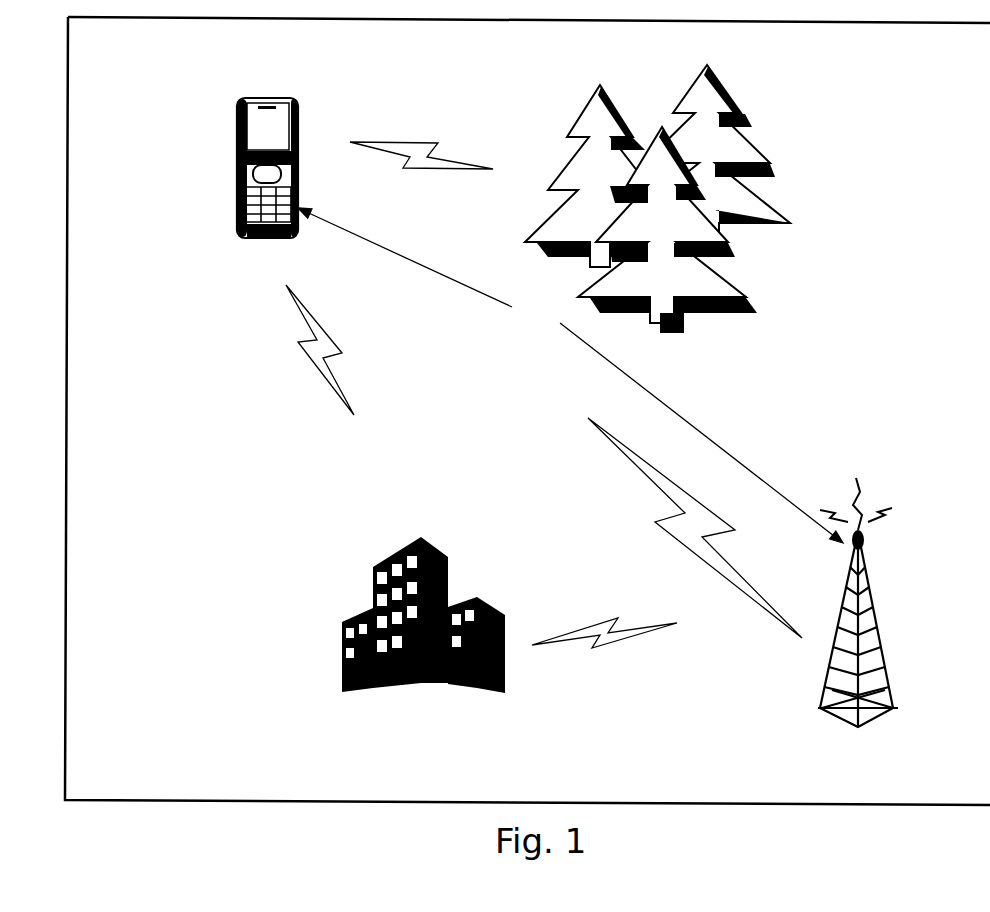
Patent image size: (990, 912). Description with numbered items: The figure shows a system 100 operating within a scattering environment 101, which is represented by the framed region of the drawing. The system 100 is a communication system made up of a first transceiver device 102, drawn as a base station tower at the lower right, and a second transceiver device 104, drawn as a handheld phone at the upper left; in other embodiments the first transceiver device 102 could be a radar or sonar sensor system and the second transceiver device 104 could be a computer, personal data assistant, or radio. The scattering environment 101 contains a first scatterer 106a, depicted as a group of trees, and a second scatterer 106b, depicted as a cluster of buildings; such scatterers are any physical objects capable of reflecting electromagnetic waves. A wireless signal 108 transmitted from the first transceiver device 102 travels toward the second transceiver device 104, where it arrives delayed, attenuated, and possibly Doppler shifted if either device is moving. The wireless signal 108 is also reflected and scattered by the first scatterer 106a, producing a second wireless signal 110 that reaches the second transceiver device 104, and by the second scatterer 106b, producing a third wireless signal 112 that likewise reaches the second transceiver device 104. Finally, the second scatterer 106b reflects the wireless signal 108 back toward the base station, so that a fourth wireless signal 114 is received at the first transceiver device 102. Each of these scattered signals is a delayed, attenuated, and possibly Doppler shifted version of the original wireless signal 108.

The system 100 is at (570, 375).
The scattering environment 101 is at (143, 769).
The first transceiver device 102 is at (889, 573).
The second transceiver device 104 is at (226, 135).
The first scatterer 106a is at (758, 134).
The second scatterer 106b is at (351, 592).
The wireless signal 108 is at (653, 485).
The second wireless signal 110 is at (414, 142).
The third wireless signal 112 is at (300, 312).
The fourth wireless signal 114 is at (623, 640).